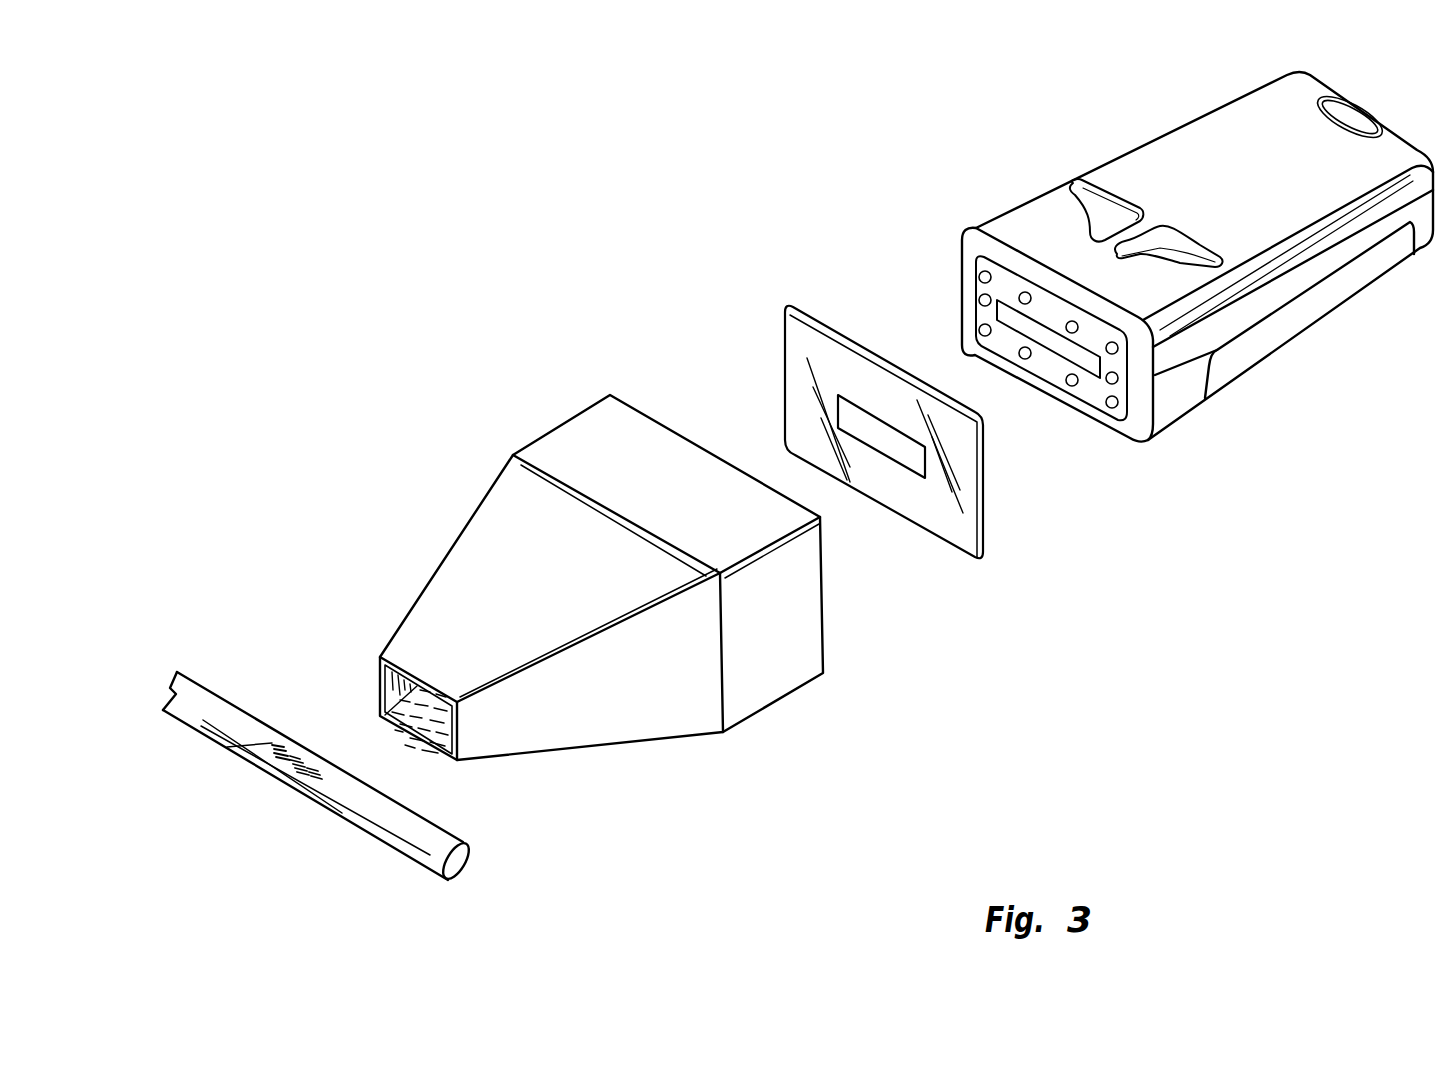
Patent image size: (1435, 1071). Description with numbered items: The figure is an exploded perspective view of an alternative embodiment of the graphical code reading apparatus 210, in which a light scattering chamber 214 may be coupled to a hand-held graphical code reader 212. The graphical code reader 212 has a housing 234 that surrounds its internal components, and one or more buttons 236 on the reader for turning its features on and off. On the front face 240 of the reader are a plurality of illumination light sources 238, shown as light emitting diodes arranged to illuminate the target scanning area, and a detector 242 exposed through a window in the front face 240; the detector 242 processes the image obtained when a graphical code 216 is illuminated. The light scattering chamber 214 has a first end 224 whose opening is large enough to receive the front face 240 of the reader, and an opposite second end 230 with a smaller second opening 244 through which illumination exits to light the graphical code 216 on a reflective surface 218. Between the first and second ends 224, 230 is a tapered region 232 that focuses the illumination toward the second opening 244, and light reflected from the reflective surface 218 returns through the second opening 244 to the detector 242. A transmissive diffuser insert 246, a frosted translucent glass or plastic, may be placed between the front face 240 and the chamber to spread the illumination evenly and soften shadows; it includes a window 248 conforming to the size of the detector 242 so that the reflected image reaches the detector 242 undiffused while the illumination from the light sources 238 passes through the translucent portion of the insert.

The graphical code reading apparatus 210 is at (578, 257).
The graphical code reader 212 is at (1289, 390).
The light scattering chamber 214 is at (715, 765).
The graphical code 216 is at (224, 746).
The reflective surface 218 is at (347, 815).
The first end 224 is at (800, 637).
The second end 230 is at (410, 640).
The tapered region 232 is at (505, 560).
The housing 234 is at (1233, 125).
The buttons 236 is at (1103, 200).
The illumination light sources 238 is at (979, 277).
The front face 240 is at (1000, 346).
The detector 242 is at (1060, 348).
The second opening 244 is at (433, 731).
The transmissive diffuser insert 246 is at (805, 380).
The window 248 is at (905, 460).